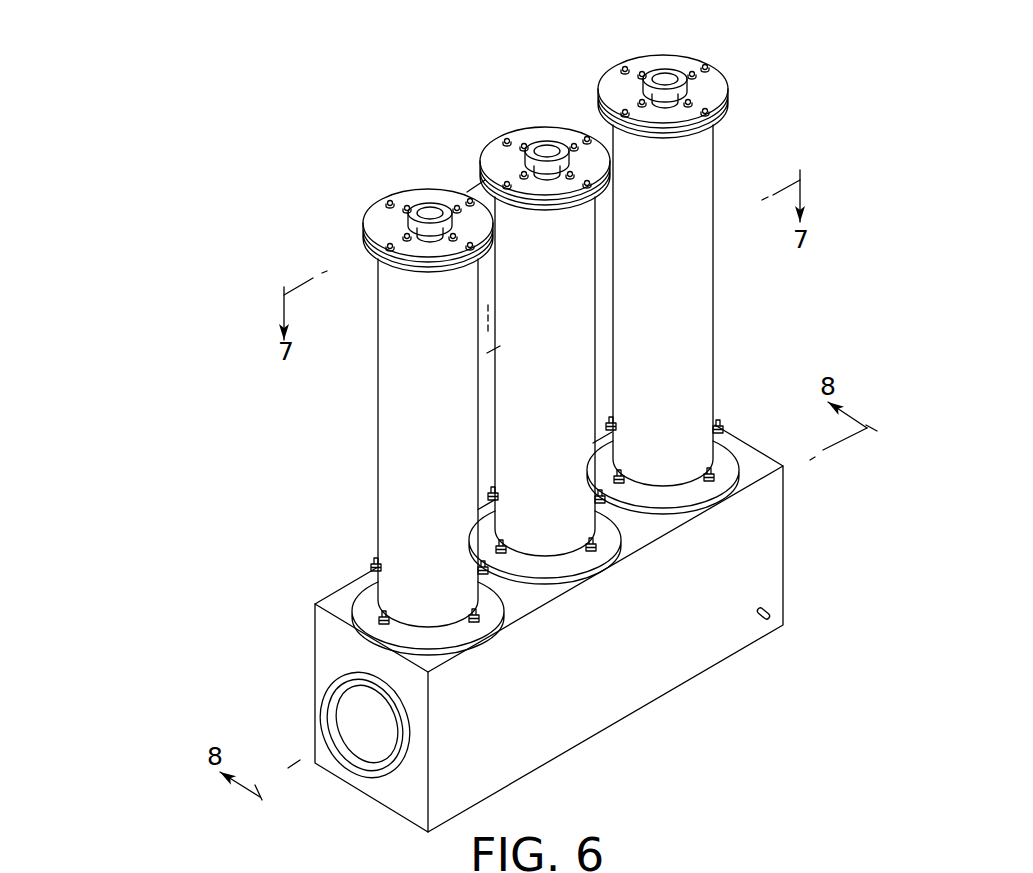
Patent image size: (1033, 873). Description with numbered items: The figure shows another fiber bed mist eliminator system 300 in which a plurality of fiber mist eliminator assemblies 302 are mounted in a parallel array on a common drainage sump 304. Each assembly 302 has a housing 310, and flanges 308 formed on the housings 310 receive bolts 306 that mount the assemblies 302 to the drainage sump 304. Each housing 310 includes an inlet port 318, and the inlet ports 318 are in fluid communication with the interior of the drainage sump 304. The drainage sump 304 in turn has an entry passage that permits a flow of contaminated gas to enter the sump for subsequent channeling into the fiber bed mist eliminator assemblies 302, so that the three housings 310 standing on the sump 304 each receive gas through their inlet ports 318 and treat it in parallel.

The fiber bed mist eliminator system 300 is at (773, 62).
The fiber mist eliminator assembly 302 is at (395, 447).
The drainage sump 304 is at (568, 720).
The bolts 306 is at (480, 622).
The flanges 308 is at (447, 633).
The housing 310 is at (393, 515).
The inlet port 318 is at (370, 752).